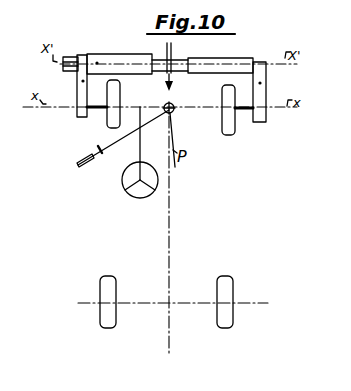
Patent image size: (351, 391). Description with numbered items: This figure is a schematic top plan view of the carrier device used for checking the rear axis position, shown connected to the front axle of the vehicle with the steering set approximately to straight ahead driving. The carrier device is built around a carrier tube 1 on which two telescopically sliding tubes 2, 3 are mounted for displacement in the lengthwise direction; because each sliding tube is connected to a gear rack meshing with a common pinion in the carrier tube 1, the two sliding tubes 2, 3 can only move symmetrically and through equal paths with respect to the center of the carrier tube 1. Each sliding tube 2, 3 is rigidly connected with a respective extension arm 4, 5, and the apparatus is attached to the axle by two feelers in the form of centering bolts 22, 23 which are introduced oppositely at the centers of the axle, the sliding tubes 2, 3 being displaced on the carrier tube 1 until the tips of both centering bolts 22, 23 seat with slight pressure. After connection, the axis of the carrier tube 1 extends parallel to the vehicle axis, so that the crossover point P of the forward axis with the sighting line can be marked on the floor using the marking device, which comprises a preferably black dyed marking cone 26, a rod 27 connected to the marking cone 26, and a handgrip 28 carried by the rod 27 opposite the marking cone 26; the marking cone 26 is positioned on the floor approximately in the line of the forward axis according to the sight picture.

The carrier tube 1 is at (178, 72).
The sliding tube 2 is at (212, 73).
The sliding tube 3 is at (133, 74).
The extension arm 4 is at (266, 93).
The extension arm 5 is at (77, 92).
The centering bolt 22 is at (238, 112).
The centering bolt 23 is at (99, 109).
The marking cone 26 is at (173, 112).
The rod 27 is at (146, 124).
The handgrip 28 is at (87, 168).